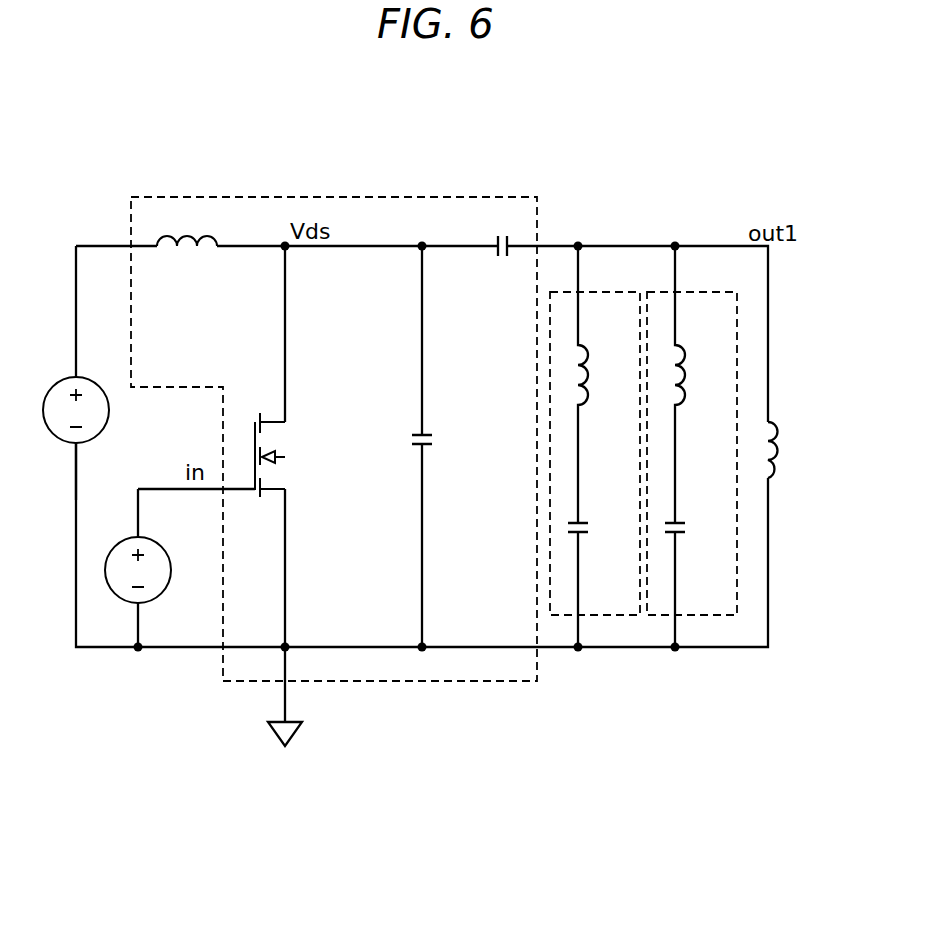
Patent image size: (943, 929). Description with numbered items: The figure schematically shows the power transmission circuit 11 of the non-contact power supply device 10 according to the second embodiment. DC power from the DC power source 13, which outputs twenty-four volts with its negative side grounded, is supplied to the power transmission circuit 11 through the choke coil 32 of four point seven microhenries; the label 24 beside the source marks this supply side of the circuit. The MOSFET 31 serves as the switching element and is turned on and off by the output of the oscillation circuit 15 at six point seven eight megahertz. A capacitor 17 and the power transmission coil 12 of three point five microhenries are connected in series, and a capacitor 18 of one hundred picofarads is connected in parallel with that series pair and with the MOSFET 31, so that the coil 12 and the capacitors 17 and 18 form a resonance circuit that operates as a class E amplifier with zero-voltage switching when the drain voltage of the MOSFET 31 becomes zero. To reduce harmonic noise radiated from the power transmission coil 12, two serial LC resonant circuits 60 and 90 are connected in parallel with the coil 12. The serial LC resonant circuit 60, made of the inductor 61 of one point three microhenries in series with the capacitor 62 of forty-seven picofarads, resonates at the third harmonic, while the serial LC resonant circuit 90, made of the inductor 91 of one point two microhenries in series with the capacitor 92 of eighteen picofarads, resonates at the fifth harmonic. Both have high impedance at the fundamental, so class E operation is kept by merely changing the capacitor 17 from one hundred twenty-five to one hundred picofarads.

The non-contact power supply device 10 is at (400, 162).
The power transmission circuit 11 is at (412, 683).
The power transmission coil 12 is at (780, 482).
The DC power source 13 is at (66, 376).
The oscillation circuit 15 is at (128, 608).
The capacitor 17 is at (496, 240).
The capacitor 18 is at (414, 436).
The power supply line 24 is at (95, 471).
The MOSFET 31 is at (256, 420).
The choke coil 32 is at (163, 232).
The serial LC resonant circuit 60 is at (705, 292).
The inductor 61 is at (668, 345).
The capacitor 62 is at (670, 533).
The serial LC resonant circuit 90 is at (607, 292).
The inductor 91 is at (572, 345).
The capacitor 92 is at (572, 533).